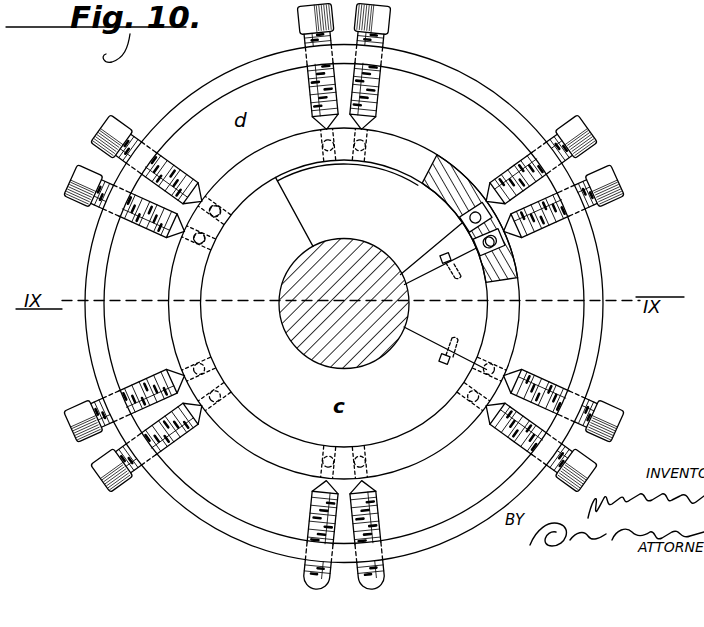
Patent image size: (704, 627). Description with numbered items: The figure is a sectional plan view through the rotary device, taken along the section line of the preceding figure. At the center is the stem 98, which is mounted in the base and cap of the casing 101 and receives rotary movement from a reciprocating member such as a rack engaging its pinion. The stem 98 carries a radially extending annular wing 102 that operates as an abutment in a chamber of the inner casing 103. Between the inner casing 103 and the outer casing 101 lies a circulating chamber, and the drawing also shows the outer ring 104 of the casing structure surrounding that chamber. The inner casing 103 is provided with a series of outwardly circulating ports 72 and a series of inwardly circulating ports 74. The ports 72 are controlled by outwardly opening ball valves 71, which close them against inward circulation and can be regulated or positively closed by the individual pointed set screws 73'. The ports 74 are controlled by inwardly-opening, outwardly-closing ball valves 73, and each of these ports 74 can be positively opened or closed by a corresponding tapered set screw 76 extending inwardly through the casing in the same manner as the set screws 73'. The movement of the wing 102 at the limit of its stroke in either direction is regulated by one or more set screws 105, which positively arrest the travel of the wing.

The casing 101 is at (460, 83).
The outer ring member 104 is at (100, 238).
The inner casing 103 is at (188, 328).
The annular wing 102 is at (381, 267).
The stem 98 is at (300, 314).
The ball valves 71 is at (509, 241).
The ports 72 is at (504, 234).
The ball valves 73 is at (356, 199).
The pointed set screws 73' is at (390, 164).
The ports 74 is at (480, 204).
The tapered set screw 76 is at (68, 188).
The set screws 105 is at (444, 263).